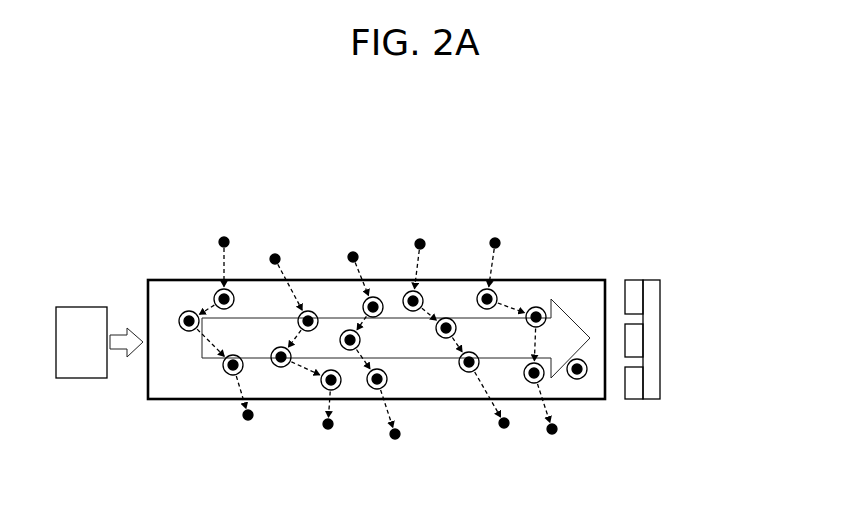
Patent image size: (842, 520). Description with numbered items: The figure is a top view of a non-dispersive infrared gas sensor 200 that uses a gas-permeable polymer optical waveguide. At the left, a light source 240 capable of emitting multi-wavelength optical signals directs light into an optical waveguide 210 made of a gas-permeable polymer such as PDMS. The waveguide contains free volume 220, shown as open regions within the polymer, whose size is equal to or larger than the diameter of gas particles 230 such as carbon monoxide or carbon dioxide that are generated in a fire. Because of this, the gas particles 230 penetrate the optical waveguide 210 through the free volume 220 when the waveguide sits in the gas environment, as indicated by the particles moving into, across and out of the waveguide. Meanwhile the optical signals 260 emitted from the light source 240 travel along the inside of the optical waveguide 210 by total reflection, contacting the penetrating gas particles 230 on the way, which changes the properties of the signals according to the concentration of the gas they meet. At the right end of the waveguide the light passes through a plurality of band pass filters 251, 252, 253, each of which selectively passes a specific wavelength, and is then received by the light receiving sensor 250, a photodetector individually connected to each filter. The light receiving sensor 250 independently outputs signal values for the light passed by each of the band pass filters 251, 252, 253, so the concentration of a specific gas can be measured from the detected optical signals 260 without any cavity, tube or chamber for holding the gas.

The non-dispersive infrared gas sensor 200 is at (445, 171).
The optical waveguide 210 is at (470, 280).
The free volume 220 is at (309, 310).
The gas particles 230 is at (222, 238).
The light source 240 is at (82, 305).
The light receiving sensor 250 is at (657, 377).
The band pass filter 251 is at (633, 290).
The band pass filter 252 is at (640, 338).
The band pass filter 253 is at (633, 390).
The optical signal 260 is at (558, 323).